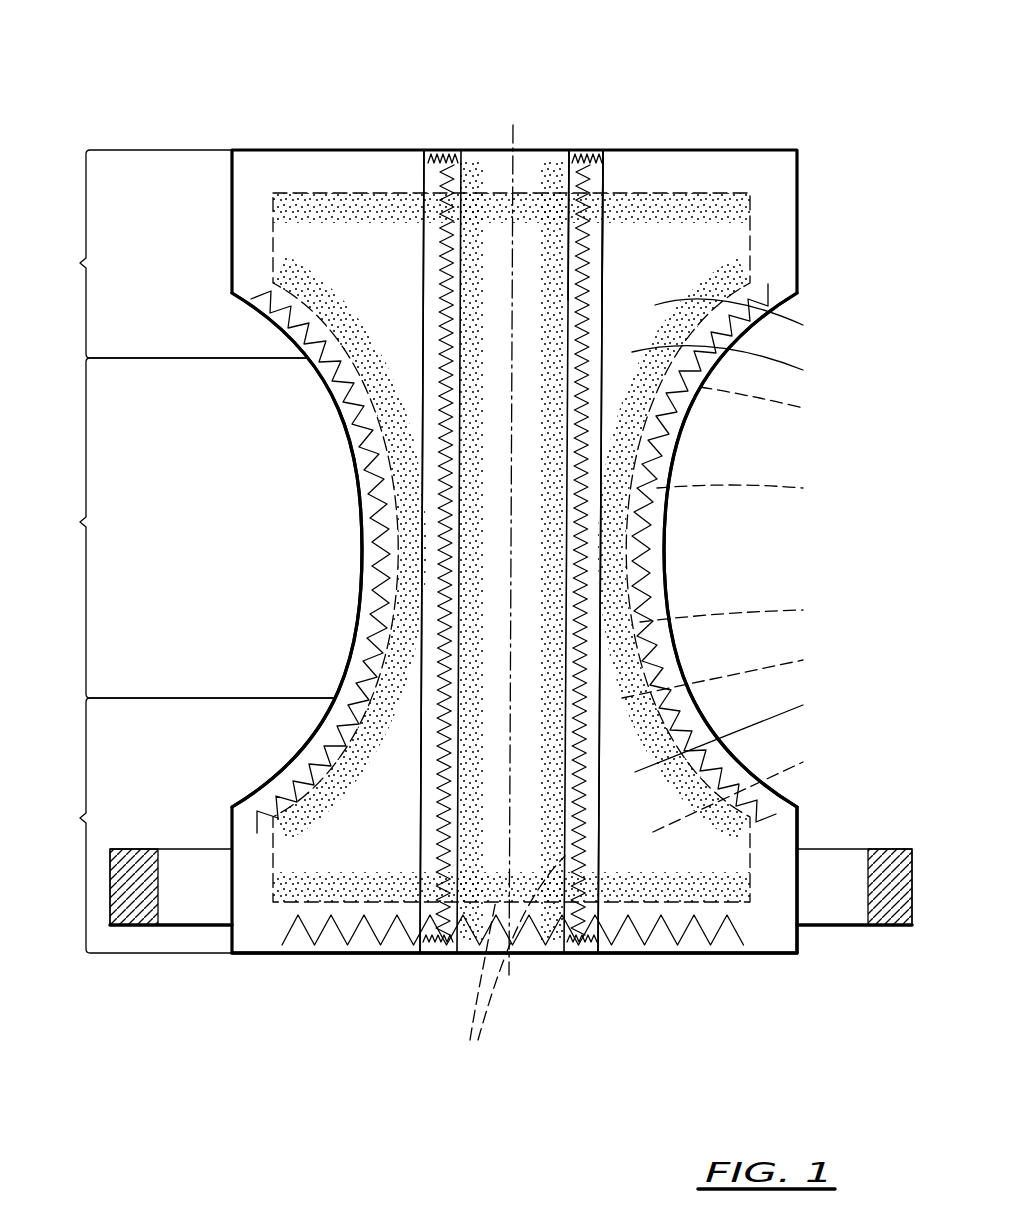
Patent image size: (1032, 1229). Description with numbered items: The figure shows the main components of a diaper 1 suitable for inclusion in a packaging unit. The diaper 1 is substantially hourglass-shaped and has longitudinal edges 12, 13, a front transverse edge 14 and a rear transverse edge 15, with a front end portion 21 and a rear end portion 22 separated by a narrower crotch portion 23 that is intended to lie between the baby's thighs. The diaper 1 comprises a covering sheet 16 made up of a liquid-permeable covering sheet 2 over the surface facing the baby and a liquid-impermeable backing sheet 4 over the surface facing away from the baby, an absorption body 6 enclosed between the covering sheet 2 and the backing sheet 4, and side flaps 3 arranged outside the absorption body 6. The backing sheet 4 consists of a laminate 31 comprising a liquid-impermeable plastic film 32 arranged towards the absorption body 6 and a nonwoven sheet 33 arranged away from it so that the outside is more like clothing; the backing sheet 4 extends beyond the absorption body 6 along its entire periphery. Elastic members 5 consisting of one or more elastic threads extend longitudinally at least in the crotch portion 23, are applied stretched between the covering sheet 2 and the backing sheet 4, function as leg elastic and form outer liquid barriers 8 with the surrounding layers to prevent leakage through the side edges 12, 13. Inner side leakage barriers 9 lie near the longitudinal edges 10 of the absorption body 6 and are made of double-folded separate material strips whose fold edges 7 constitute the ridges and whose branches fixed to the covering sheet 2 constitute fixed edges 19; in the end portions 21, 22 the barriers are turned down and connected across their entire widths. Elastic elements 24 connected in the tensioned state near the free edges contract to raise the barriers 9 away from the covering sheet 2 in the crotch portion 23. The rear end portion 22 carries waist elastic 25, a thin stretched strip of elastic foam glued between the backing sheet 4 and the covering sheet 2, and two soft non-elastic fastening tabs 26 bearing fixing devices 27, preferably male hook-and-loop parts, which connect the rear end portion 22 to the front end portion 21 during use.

The diaper 1 is at (779, 138).
The liquid-permeable covering sheet 2 is at (728, 365).
The side flaps 3 is at (365, 625).
The liquid-impermeable backing sheet 4 is at (762, 405).
The elastic members 5 is at (230, 655).
The absorption body 6 is at (663, 883).
The fold edges 7 is at (526, 517).
The outer liquid barriers 8 is at (340, 441).
The inner side leakage barriers 9 is at (440, 226).
The longitudinal edges of the absorption body 10 is at (230, 558).
The longitudinal edge 12 is at (677, 450).
The longitudinal edge 13 is at (359, 490).
The front transverse edge 14 is at (561, 152).
The rear transverse edge 15 is at (544, 954).
The covering sheet 16 is at (748, 319).
The fixed edges 19 is at (423, 243).
The front end portion 21 is at (75, 262).
The rear end portion 22 is at (75, 825).
The crotch portion 23 is at (75, 525).
The elastic elements 24 is at (508, 967).
The waist elastic 25 is at (337, 933).
The fastening tabs 26 is at (192, 913).
The fixing devices 27 is at (138, 912).
The laminate 31 is at (731, 670).
The liquid-impermeable plastic film 32 is at (738, 729).
The nonwoven sheet 33 is at (747, 789).